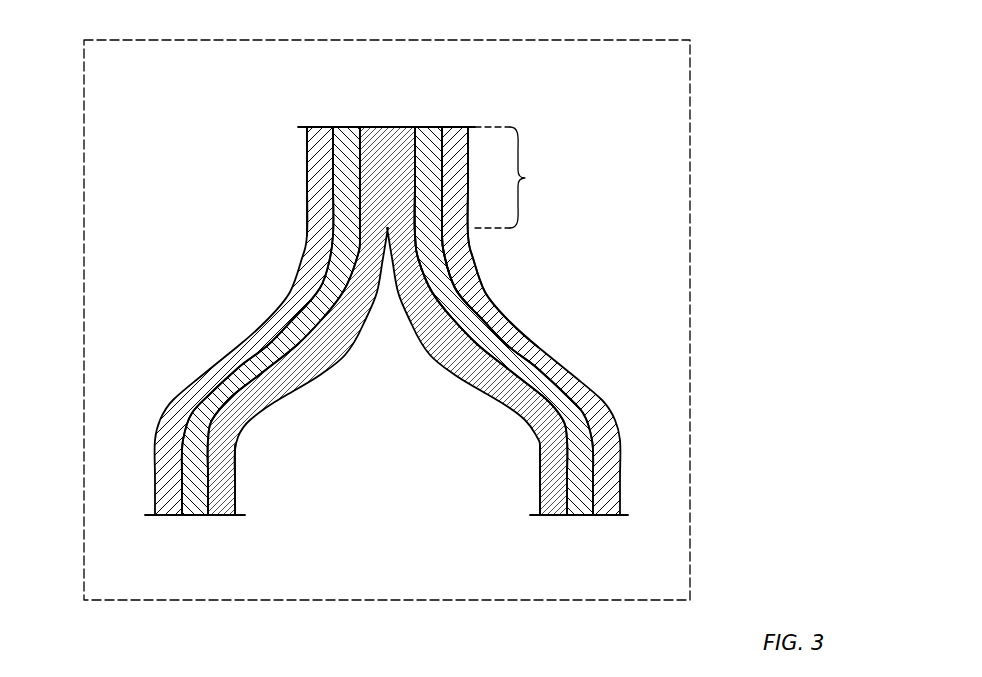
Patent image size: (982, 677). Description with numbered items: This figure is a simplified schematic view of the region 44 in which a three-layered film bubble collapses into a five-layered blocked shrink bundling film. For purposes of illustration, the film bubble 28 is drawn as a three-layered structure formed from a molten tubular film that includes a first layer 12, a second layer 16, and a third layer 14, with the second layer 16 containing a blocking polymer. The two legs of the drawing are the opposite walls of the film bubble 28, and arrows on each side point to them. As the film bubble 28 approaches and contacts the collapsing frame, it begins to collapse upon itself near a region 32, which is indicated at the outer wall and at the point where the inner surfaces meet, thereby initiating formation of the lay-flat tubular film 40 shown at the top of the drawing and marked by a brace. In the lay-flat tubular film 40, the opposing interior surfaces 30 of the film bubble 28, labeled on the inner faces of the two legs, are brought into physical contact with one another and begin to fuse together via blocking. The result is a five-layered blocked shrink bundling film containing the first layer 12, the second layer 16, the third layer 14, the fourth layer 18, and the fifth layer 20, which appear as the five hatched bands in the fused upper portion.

The first layer 12 is at (172, 497).
The third layer 14 is at (343, 132).
The second layer 16 is at (394, 143).
The fourth layer 18 is at (428, 132).
The fifth layer 20 is at (457, 132).
The film bubble 28 is at (105, 439).
The opposing interior surfaces 30 is at (237, 483).
The region 32 is at (313, 170).
The lay-flat tubular film 40 is at (431, 177).
The region 44 is at (693, 120).